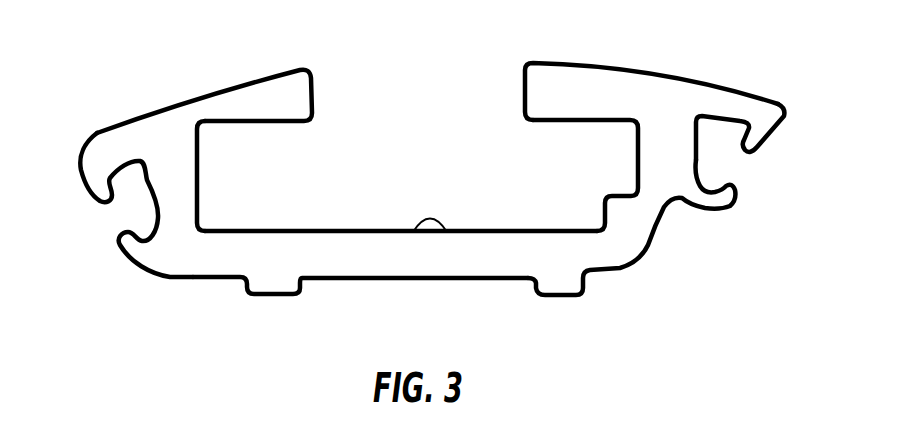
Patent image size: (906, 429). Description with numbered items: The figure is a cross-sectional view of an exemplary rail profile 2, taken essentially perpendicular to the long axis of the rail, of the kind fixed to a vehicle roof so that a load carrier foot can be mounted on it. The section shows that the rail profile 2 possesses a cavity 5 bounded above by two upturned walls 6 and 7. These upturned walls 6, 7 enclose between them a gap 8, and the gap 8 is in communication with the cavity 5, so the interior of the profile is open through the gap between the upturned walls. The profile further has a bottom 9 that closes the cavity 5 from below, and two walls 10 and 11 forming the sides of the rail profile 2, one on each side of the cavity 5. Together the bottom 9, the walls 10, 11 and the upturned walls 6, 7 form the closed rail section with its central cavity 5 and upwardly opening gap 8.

The rail profile 2 is at (755, 110).
The cavity 5 is at (428, 187).
The upturned wall 6 is at (607, 92).
The upturned wall 7 is at (248, 97).
The gap 8 is at (417, 139).
The bottom 9 is at (447, 232).
The wall 10 is at (167, 195).
The wall 11 is at (670, 192).